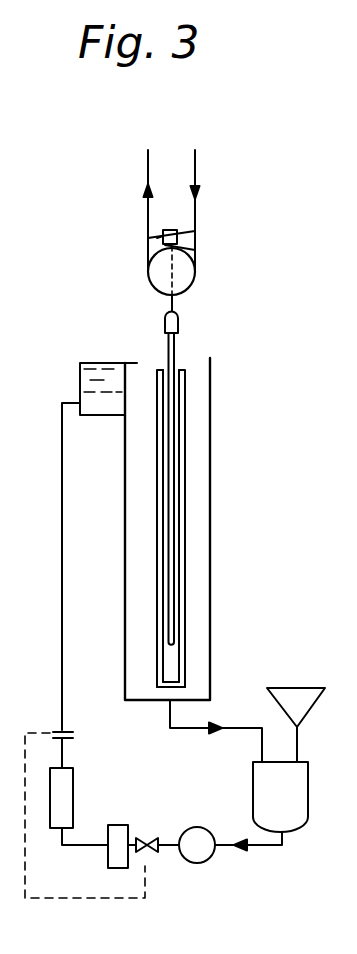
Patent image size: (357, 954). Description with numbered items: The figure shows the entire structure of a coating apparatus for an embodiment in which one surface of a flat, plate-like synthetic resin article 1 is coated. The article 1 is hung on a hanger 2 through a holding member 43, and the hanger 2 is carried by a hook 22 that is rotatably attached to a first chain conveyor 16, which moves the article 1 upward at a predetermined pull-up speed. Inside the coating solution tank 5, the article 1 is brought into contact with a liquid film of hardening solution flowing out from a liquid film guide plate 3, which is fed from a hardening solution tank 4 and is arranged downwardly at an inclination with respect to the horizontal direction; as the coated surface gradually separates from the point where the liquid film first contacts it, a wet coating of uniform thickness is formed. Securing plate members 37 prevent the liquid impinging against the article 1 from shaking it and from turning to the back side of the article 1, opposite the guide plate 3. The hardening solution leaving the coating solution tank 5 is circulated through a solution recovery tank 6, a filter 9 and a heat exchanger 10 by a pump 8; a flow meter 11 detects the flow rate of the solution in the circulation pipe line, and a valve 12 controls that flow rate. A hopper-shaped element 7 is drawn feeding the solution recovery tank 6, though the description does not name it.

The synthetic resin article 1 is at (178, 348).
The hanger 2 is at (169, 230).
The guide plate 3 is at (160, 402).
The hardening solution tank 4 is at (80, 373).
The coating solution tank 5 is at (212, 503).
The solution recovery tank 6 is at (310, 787).
The hopper 7 is at (302, 688).
The pump 8 is at (200, 827).
The filter 9 is at (123, 826).
The heat exchanger 10 is at (75, 788).
The flow meter 11 is at (52, 728).
The valve 12 is at (155, 857).
The first chain conveyor 16 is at (196, 215).
The hook 22 is at (157, 238).
The securing plate member 37 is at (186, 652).
The holding member 43 is at (167, 313).